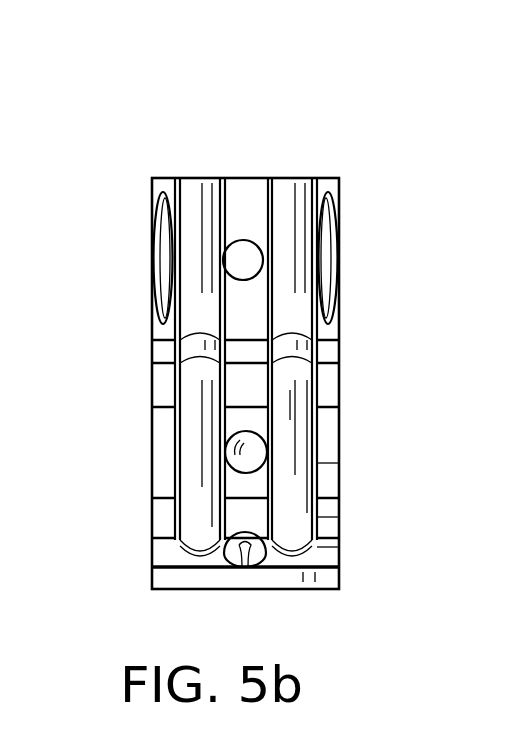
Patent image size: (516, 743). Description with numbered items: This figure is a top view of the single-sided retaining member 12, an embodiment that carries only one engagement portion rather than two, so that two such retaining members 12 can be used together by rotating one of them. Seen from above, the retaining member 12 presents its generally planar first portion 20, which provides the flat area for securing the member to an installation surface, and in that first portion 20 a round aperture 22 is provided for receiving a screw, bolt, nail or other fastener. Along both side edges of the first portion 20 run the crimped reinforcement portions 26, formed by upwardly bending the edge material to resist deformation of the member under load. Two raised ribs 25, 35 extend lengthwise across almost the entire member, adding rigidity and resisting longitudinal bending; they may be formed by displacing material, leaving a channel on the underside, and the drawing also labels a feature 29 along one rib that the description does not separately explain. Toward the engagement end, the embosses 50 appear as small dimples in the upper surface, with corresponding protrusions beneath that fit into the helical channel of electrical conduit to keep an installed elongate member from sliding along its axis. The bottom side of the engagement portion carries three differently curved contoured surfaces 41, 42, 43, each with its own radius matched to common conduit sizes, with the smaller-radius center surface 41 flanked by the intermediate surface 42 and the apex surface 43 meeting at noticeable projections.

The retaining member 12 is at (112, 160).
The first portion 20 is at (247, 193).
The aperture 22 is at (240, 242).
The raised rib 25 is at (297, 252).
The crimped reinforcement portion 26 is at (152, 252).
The right guide tube 29 is at (285, 193).
The raised rib 35 is at (290, 390).
The contoured surface 41 is at (338, 547).
The intermediate contoured surface 42 is at (338, 517).
The apex contoured surface 43 is at (337, 462).
The emboss 50 is at (228, 462).